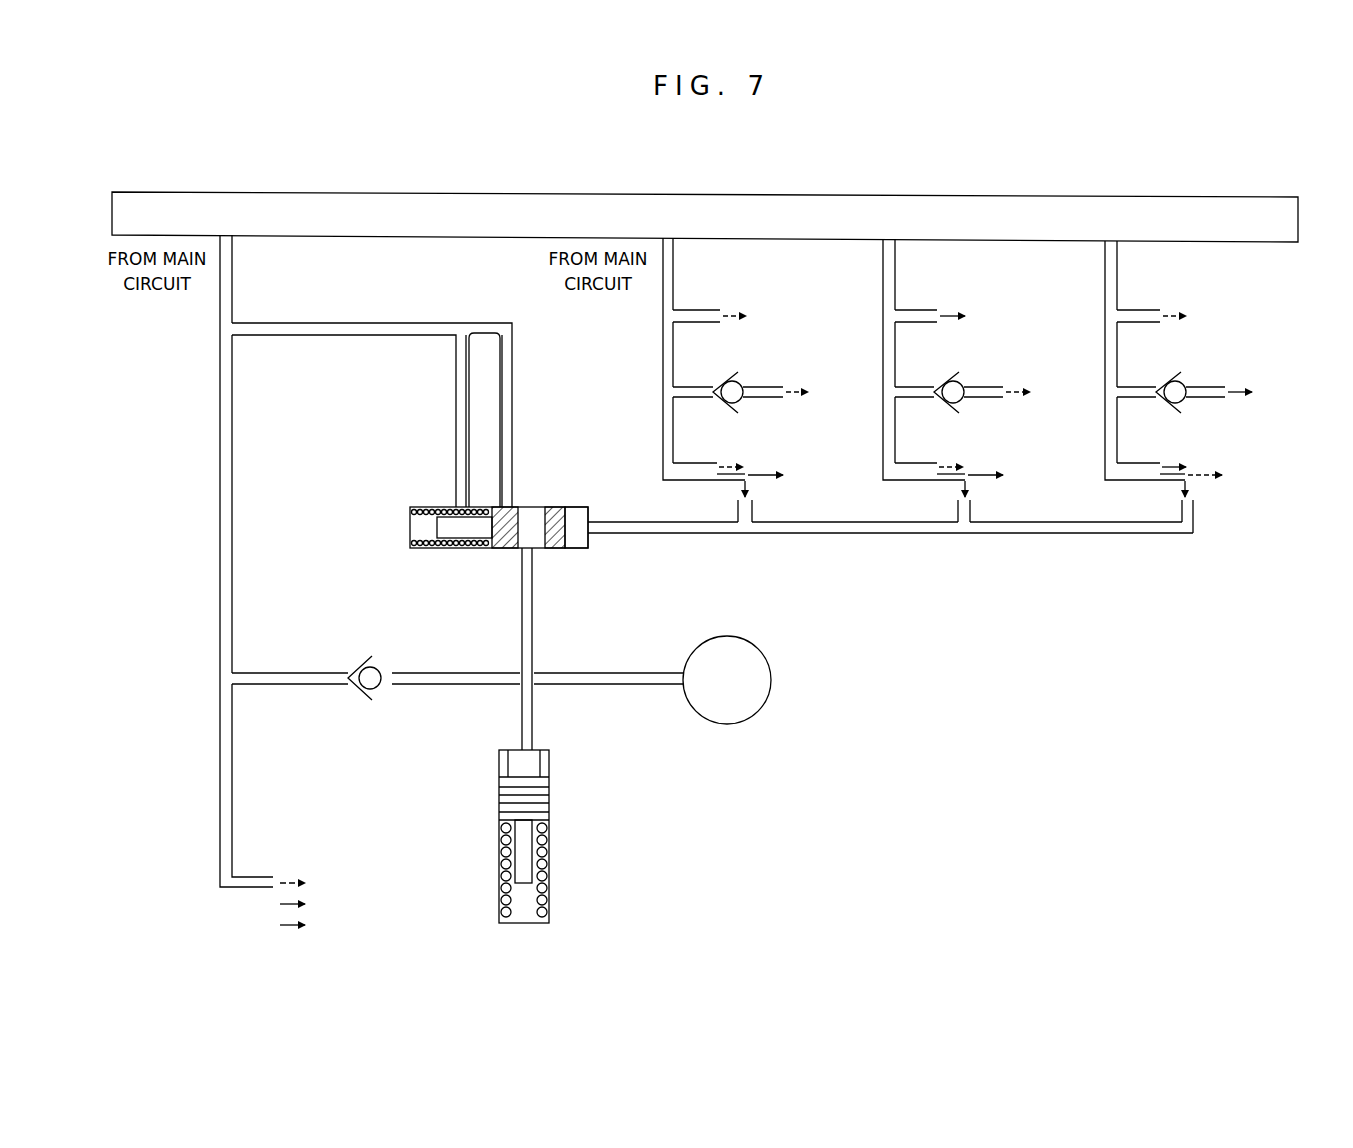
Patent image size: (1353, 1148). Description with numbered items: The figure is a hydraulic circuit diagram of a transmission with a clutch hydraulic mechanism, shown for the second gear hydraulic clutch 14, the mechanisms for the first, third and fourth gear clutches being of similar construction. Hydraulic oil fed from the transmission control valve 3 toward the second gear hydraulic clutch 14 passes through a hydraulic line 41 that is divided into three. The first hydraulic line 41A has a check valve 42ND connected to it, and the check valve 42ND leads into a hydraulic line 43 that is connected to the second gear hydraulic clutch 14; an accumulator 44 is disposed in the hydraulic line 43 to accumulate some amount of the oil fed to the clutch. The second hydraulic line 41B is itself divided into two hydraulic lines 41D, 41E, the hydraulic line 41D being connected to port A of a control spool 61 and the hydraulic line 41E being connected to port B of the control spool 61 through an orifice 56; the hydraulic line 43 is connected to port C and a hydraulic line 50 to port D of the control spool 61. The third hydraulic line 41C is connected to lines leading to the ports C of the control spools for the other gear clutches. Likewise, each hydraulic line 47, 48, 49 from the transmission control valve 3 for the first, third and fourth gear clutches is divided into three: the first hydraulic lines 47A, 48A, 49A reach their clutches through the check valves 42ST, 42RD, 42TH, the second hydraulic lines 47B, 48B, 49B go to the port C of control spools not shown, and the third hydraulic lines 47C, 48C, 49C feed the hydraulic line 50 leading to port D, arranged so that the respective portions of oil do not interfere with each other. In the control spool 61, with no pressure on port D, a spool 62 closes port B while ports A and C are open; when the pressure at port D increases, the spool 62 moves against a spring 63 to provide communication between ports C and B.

The transmission control valve 3 is at (1197, 197).
The second gear hydraulic clutch 14 is at (771, 680).
The hydraulic line 41 is at (220, 400).
The first hydraulic line 41A is at (285, 686).
The second hydraulic line 41B is at (372, 322).
The third hydraulic line 41C is at (250, 875).
The hydraulic line 41D is at (456, 400).
The hydraulic line 41E is at (512, 386).
The check valve 42ND is at (365, 690).
The check valve 42ST is at (741, 403).
The check valve 42RD is at (962, 403).
The check valve 42TH is at (1184, 403).
The hydraulic line 43 is at (466, 687).
The accumulator 44 is at (499, 812).
The hydraulic line 47 is at (663, 343).
The first hydraulic line 47A is at (692, 388).
The second hydraulic line 47B is at (692, 310).
The third hydraulic line 47C is at (691, 463).
The hydraulic line 48 is at (883, 284).
The first hydraulic line 48A is at (912, 388).
The second hydraulic line 48B is at (912, 310).
The third hydraulic line 48C is at (911, 463).
The hydraulic line 49 is at (1105, 284).
The first hydraulic line 49A is at (1137, 388).
The second hydraulic line 49B is at (1137, 310).
The third hydraulic line 49C is at (1136, 463).
The hydraulic line 50 is at (882, 534).
The orifice 56 is at (482, 325).
The control spool 61 is at (504, 520).
The spool 62 is at (508, 549).
The spring 63 is at (452, 549).